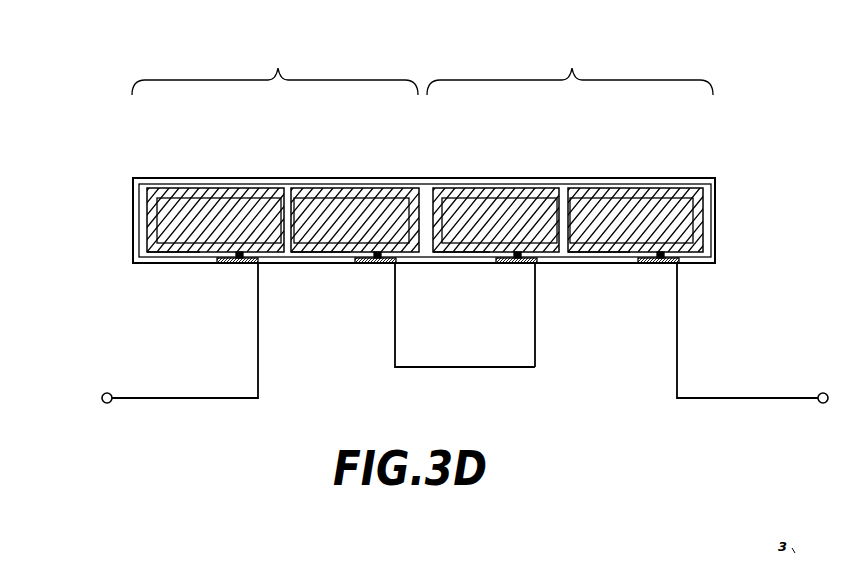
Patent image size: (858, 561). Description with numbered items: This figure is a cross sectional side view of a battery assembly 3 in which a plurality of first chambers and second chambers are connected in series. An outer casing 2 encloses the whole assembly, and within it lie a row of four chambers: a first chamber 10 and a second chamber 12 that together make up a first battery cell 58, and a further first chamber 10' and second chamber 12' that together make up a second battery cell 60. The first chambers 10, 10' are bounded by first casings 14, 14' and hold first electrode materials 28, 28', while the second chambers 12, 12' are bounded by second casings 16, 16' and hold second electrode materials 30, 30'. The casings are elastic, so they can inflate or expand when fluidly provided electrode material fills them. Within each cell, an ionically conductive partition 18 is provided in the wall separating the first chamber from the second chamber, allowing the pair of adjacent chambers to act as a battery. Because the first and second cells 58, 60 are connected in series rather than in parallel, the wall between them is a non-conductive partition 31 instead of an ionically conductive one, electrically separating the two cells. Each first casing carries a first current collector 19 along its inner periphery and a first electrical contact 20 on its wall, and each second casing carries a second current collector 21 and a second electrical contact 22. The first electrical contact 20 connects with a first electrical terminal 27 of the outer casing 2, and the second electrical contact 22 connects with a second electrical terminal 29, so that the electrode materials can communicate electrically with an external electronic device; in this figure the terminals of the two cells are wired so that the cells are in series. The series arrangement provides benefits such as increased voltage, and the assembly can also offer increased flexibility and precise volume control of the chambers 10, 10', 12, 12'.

The outer casing 2 is at (716, 178).
The battery assembly 3 is at (145, 145).
The first chamber 10 is at (213, 174).
The first chamber 10' is at (494, 192).
The second chamber 12 is at (352, 195).
The second chamber 12' is at (634, 192).
The first casing 14 is at (173, 299).
The first casing 14' is at (461, 298).
The second casing 16 is at (320, 299).
The second casing 16' is at (599, 298).
The ionically conductive partition 18 is at (565, 200).
The first current collector 19 is at (196, 190).
The first electrical contact 20 is at (236, 256).
The second current collector 21 is at (538, 198).
The second electrical contact 22 is at (374, 257).
The first electrical terminal 27 is at (251, 264).
The first electrode material 28 is at (219, 220).
The first electrode material 28' is at (499, 220).
The second electrical terminal 29 is at (388, 264).
The second electrode material 30 is at (351, 220).
The second electrode material 30' is at (631, 220).
The non-conductive partition 31 is at (427, 205).
The first battery cell 58 is at (275, 68).
The second battery cell 60 is at (570, 68).